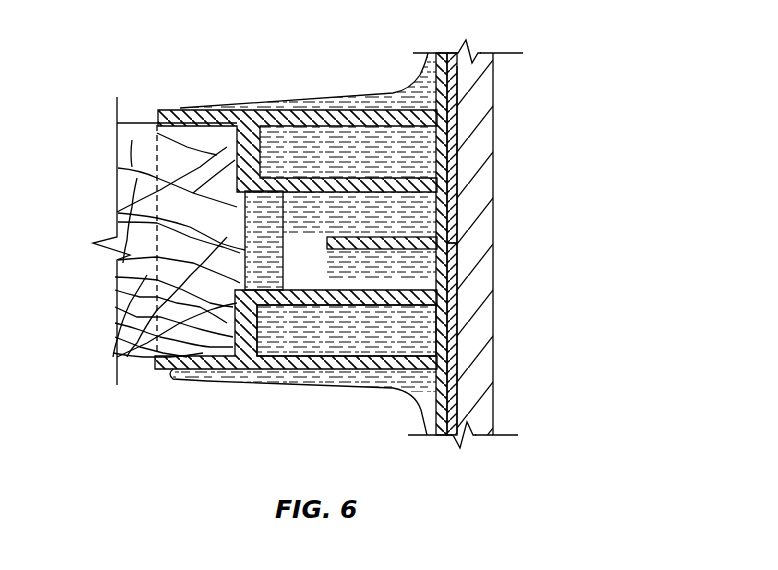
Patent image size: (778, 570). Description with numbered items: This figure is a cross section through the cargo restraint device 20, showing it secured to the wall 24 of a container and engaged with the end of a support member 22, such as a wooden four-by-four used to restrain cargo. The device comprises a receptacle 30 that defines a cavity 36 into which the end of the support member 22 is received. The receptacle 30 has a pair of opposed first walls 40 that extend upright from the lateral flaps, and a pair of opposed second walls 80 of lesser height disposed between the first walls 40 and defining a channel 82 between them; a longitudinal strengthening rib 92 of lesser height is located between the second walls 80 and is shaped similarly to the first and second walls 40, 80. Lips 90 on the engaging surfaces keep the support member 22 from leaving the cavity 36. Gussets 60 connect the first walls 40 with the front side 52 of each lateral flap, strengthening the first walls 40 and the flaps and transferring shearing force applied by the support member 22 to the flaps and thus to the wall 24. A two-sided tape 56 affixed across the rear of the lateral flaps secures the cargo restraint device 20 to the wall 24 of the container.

The cargo restraint device 20 is at (163, 372).
The support member 22 is at (135, 132).
The wall 24 is at (477, 65).
The receptacle 30 is at (443, 217).
The cavity 36 is at (199, 125).
The first walls 40 is at (200, 378).
The front side 52 is at (453, 92).
The two-sided tape 56 is at (448, 350).
The gussets 60 is at (309, 100).
The second walls 80 is at (403, 178).
The channel 82 is at (387, 291).
The lips 90 is at (118, 212).
The longitudinal strengthening rib 92 is at (397, 233).